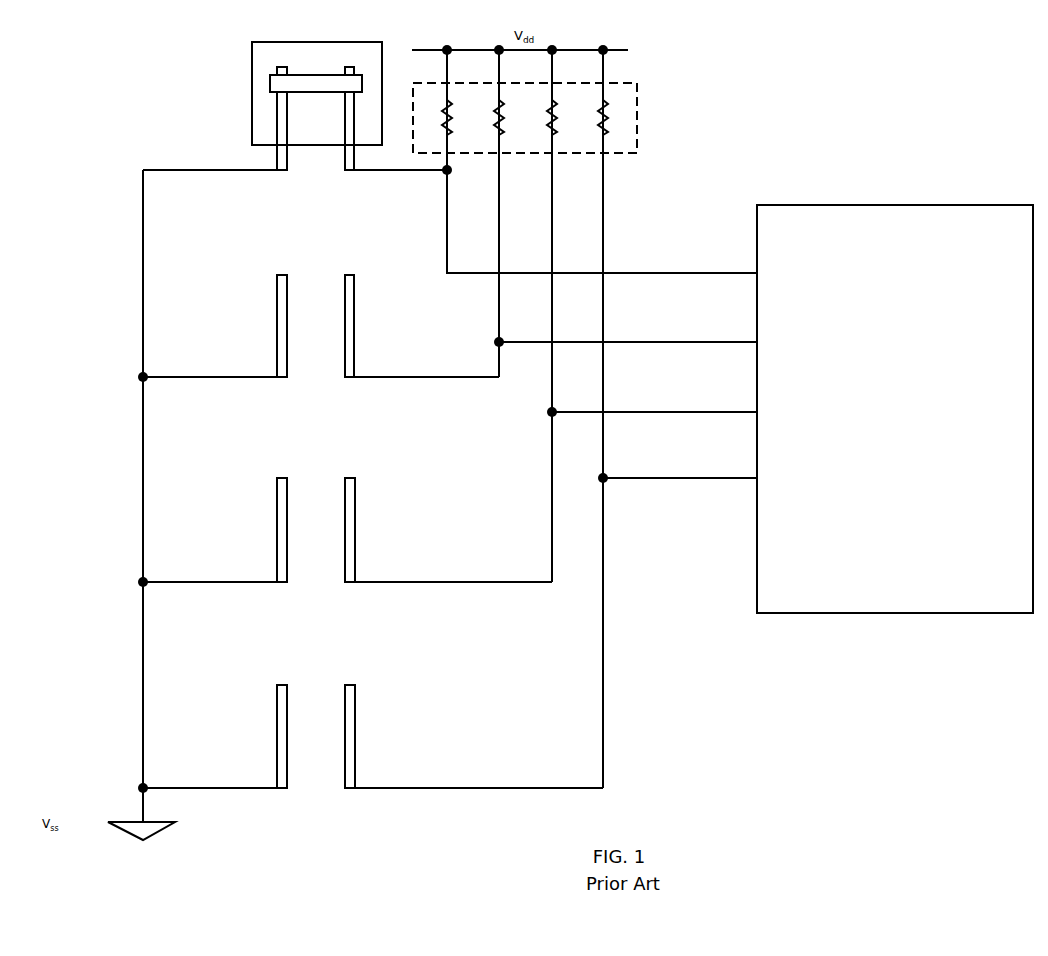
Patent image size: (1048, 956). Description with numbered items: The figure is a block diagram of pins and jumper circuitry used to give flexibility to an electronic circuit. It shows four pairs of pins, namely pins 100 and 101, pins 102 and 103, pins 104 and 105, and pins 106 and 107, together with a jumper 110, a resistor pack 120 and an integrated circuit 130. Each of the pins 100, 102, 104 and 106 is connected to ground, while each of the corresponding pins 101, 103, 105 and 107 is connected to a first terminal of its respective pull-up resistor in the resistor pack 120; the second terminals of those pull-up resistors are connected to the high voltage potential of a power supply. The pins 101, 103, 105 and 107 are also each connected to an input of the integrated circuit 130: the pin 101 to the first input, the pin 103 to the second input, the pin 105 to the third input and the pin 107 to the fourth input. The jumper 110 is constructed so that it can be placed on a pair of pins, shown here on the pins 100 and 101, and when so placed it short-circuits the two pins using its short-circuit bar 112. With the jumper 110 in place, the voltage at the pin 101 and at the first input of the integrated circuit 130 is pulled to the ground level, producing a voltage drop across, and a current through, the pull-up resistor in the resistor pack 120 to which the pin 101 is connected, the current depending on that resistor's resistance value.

The pin 100 is at (288, 163).
The pin 101 is at (344, 163).
The pin 102 is at (288, 370).
The pin 103 is at (344, 370).
The pin 104 is at (288, 575).
The pin 105 is at (344, 575).
The pin 106 is at (288, 781).
The pin 107 is at (344, 781).
The jumper 110 is at (252, 52).
The short-circuit bar 112 is at (270, 83).
The resistor pack 120 is at (637, 110).
The integrated circuit (IC) 130 is at (890, 205).